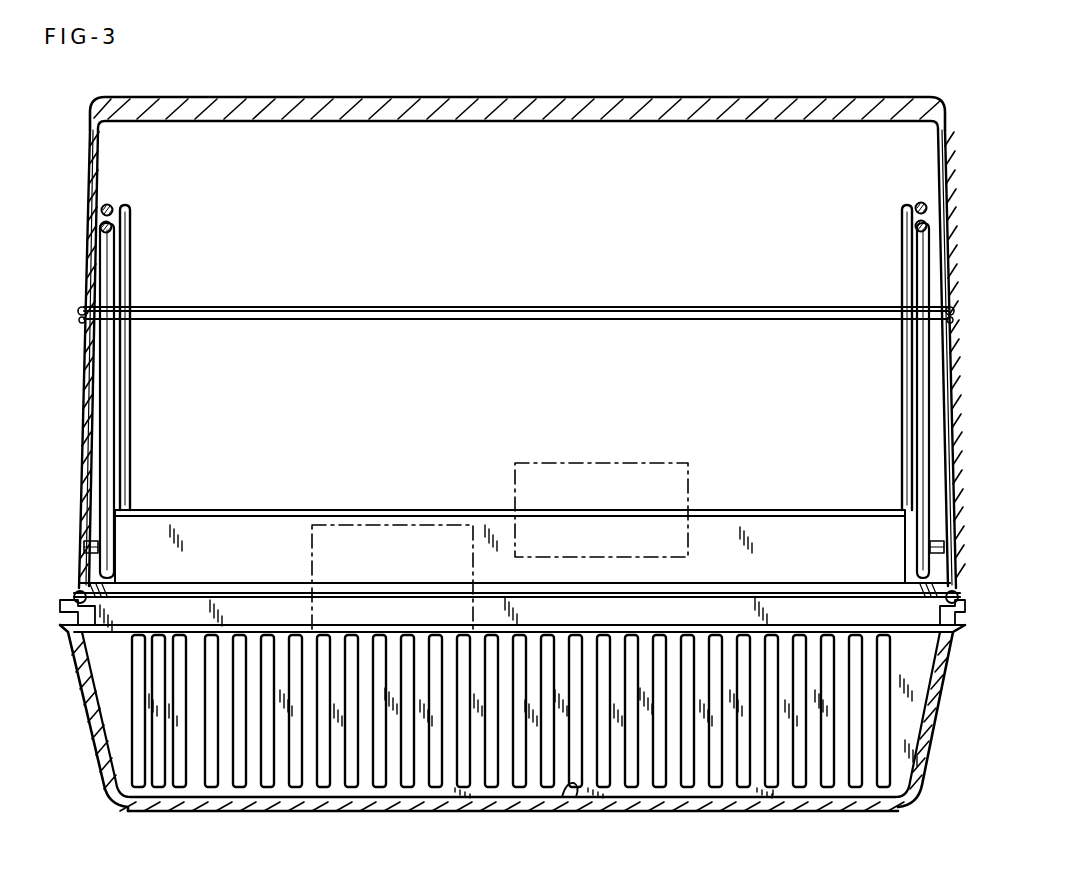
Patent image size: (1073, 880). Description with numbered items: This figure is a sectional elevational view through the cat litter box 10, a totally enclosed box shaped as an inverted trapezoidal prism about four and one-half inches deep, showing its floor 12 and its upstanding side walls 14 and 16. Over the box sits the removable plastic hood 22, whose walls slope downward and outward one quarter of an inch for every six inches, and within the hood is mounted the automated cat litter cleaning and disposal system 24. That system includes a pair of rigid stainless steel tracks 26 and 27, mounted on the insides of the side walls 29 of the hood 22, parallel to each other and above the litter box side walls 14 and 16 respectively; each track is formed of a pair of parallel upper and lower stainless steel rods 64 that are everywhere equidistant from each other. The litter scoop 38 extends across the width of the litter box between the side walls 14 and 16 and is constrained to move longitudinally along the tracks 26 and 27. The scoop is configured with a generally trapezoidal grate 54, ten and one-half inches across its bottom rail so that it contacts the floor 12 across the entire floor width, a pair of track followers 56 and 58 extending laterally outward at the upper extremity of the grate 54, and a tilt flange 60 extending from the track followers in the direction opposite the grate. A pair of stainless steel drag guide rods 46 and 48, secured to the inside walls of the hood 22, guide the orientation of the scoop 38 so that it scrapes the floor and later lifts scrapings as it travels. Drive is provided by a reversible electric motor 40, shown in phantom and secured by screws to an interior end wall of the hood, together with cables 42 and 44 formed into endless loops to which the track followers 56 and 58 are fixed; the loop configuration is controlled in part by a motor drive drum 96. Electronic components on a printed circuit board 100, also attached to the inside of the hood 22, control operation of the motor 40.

The cat litter box 10 is at (513, 744).
The floor 12 is at (568, 790).
The side wall 14 is at (90, 700).
The side wall 16 is at (925, 722).
The hood 22 is at (582, 97).
The automated cat litter cleaning and disposal system 24 is at (516, 340).
The track 26 is at (98, 470).
The track 27 is at (935, 440).
The side walls of the hood 29 is at (84, 376).
The litter scoop 38 is at (898, 689).
The reversible electric motor 40 is at (370, 525).
The cable 42 is at (90, 503).
The cable 44 is at (938, 496).
The drag guide rod 46 is at (128, 207).
The drag guide rod 48 is at (904, 208).
The grate 54 is at (570, 743).
The track follower 56 is at (96, 545).
The track follower 58 is at (932, 545).
The tilt flange 60 is at (266, 518).
The stainless steel rods 64 is at (104, 205).
The motor drive drum 96 is at (186, 585).
The printed circuit board 100 is at (616, 462).